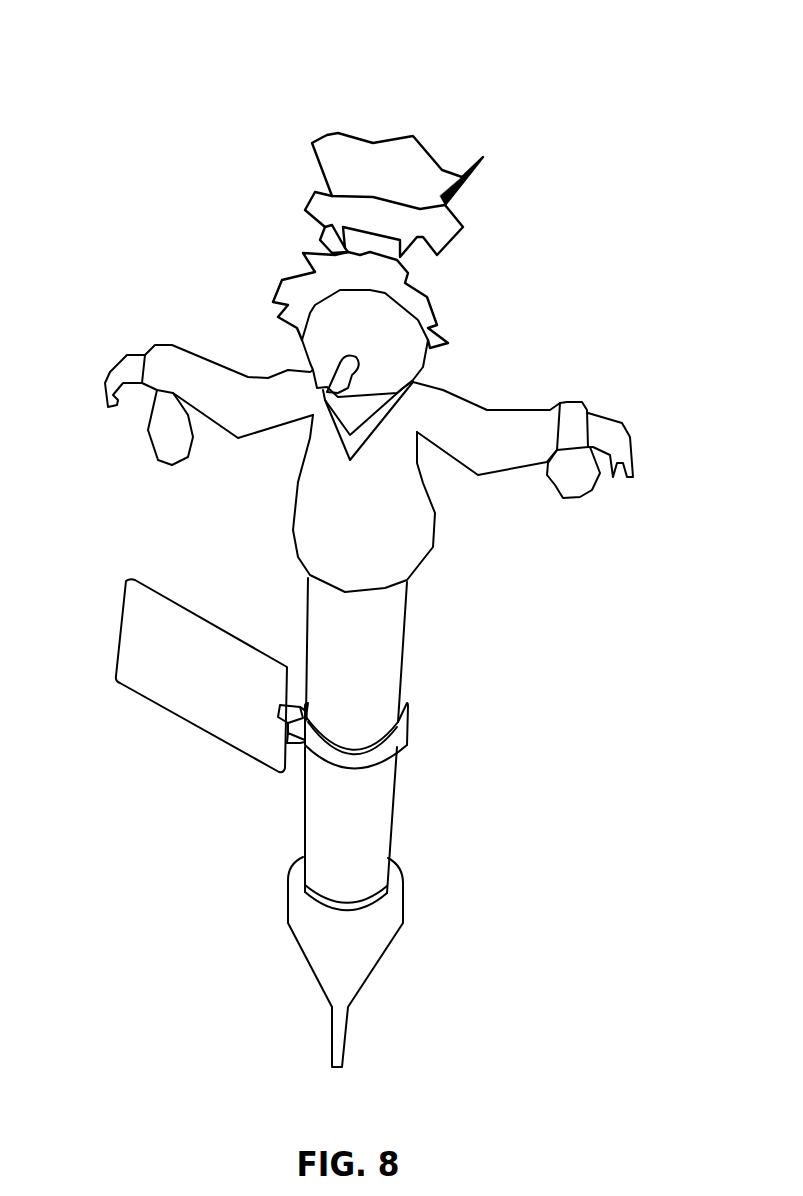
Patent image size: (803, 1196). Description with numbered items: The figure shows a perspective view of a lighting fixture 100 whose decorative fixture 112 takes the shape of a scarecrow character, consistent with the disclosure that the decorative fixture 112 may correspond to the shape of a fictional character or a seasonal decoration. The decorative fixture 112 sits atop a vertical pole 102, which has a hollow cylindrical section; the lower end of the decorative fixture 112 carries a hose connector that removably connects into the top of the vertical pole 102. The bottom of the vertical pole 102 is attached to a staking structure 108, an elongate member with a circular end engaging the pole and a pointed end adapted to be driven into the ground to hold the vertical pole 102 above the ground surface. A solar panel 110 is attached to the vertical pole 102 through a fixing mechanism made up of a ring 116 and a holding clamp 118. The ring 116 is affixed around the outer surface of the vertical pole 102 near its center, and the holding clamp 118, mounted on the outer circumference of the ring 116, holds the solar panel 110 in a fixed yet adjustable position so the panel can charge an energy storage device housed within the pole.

The lighting fixture 100 is at (375, 60).
The vertical pole 102 is at (420, 648).
The staking structure 108 is at (380, 960).
The solar panel 110 is at (120, 630).
The decorative fixture 112 is at (246, 360).
The ring 116 is at (405, 737).
The holding clamp 118 is at (288, 707).